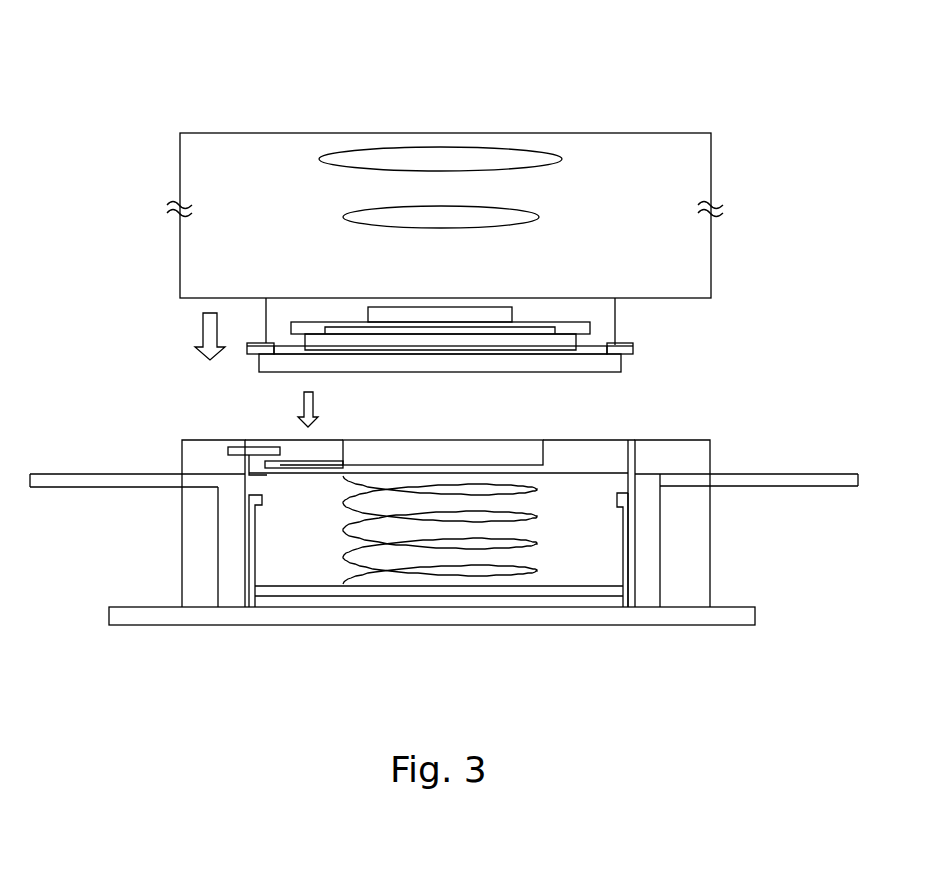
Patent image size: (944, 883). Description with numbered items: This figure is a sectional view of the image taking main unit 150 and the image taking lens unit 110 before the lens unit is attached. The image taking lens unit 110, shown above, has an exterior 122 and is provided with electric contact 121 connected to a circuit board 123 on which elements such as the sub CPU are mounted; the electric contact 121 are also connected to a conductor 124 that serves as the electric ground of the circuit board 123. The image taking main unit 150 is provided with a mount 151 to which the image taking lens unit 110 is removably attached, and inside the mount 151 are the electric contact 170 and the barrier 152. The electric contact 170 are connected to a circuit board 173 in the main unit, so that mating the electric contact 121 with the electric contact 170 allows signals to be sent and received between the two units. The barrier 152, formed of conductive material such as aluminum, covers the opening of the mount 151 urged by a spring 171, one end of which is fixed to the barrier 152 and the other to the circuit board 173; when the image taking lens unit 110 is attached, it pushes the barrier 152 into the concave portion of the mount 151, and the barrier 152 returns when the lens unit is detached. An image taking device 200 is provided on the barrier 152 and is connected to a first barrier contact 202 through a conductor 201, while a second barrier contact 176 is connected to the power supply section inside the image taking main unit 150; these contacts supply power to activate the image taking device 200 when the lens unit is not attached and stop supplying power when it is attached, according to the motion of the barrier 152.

The image taking lens unit 110 is at (168, 94).
The exterior 122 is at (693, 160).
The circuit board 123 is at (568, 323).
The conductor 124 is at (598, 338).
The electric contact 121 is at (257, 355).
The image taking main unit 150 is at (712, 433).
The mount 151 is at (210, 440).
The barrier 152 is at (318, 440).
The image taking device 200 is at (432, 440).
The second barrier contact 176 is at (277, 440).
The conductor 201 is at (317, 476).
The first barrier contact 202 is at (269, 476).
The electric contact 170 is at (263, 506).
The spring 171 is at (530, 542).
The circuit board 173 is at (526, 627).